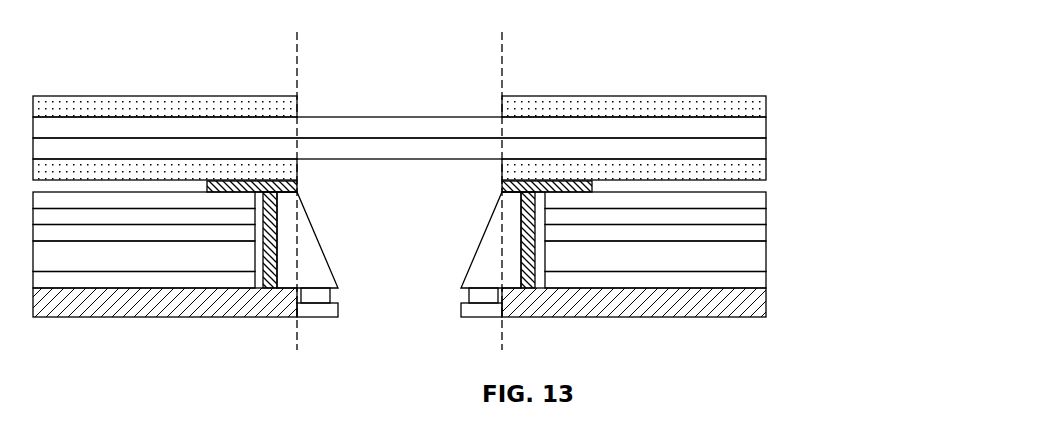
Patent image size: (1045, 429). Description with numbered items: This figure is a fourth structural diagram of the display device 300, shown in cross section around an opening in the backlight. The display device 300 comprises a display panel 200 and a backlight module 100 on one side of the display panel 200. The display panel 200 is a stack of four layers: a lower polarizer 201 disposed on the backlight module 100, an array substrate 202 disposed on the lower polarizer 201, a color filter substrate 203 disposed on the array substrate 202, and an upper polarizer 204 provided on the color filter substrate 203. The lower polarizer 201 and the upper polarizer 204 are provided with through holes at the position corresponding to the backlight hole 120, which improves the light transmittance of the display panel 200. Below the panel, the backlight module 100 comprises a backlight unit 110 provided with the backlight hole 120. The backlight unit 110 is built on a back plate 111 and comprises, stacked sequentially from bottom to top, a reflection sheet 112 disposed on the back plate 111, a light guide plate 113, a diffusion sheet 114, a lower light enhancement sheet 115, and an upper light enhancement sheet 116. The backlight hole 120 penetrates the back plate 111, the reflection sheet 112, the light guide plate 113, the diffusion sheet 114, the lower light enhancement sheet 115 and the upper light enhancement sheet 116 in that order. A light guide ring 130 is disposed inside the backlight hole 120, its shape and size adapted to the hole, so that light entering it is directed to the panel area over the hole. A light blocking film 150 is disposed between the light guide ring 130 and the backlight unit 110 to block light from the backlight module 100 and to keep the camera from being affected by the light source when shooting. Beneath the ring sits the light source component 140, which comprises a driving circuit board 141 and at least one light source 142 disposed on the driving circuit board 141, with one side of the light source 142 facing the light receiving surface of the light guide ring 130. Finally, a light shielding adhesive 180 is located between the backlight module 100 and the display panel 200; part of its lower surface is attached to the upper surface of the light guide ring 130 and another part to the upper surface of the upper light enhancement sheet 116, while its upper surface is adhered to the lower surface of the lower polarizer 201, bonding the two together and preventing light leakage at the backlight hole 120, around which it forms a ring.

The display device 300 is at (120, 68).
The backlight hole 120 is at (396, 203).
The display panel 200 is at (462, 132).
The upper polarizer 204 is at (735, 105).
The color filter substrate 203 is at (735, 126).
The array substrate 202 is at (735, 147).
The lower polarizer 201 is at (735, 168).
The light shielding adhesive 180 is at (540, 187).
The backlight module 100 is at (488, 273).
The backlight unit 110 is at (461, 248).
The upper light enhancement sheet 116 is at (735, 200).
The lower light enhancement sheet 115 is at (735, 216).
The diffusion sheet 114 is at (735, 232).
The light guide plate 113 is at (735, 257).
The reflection sheet 112 is at (735, 279).
The back plate 111 is at (434, 299).
The light blocking film 150 is at (273, 267).
The light guide ring 130 is at (510, 272).
The light source component 140 is at (399, 327).
The light source 142 is at (320, 293).
The driving circuit board 141 is at (308, 310).